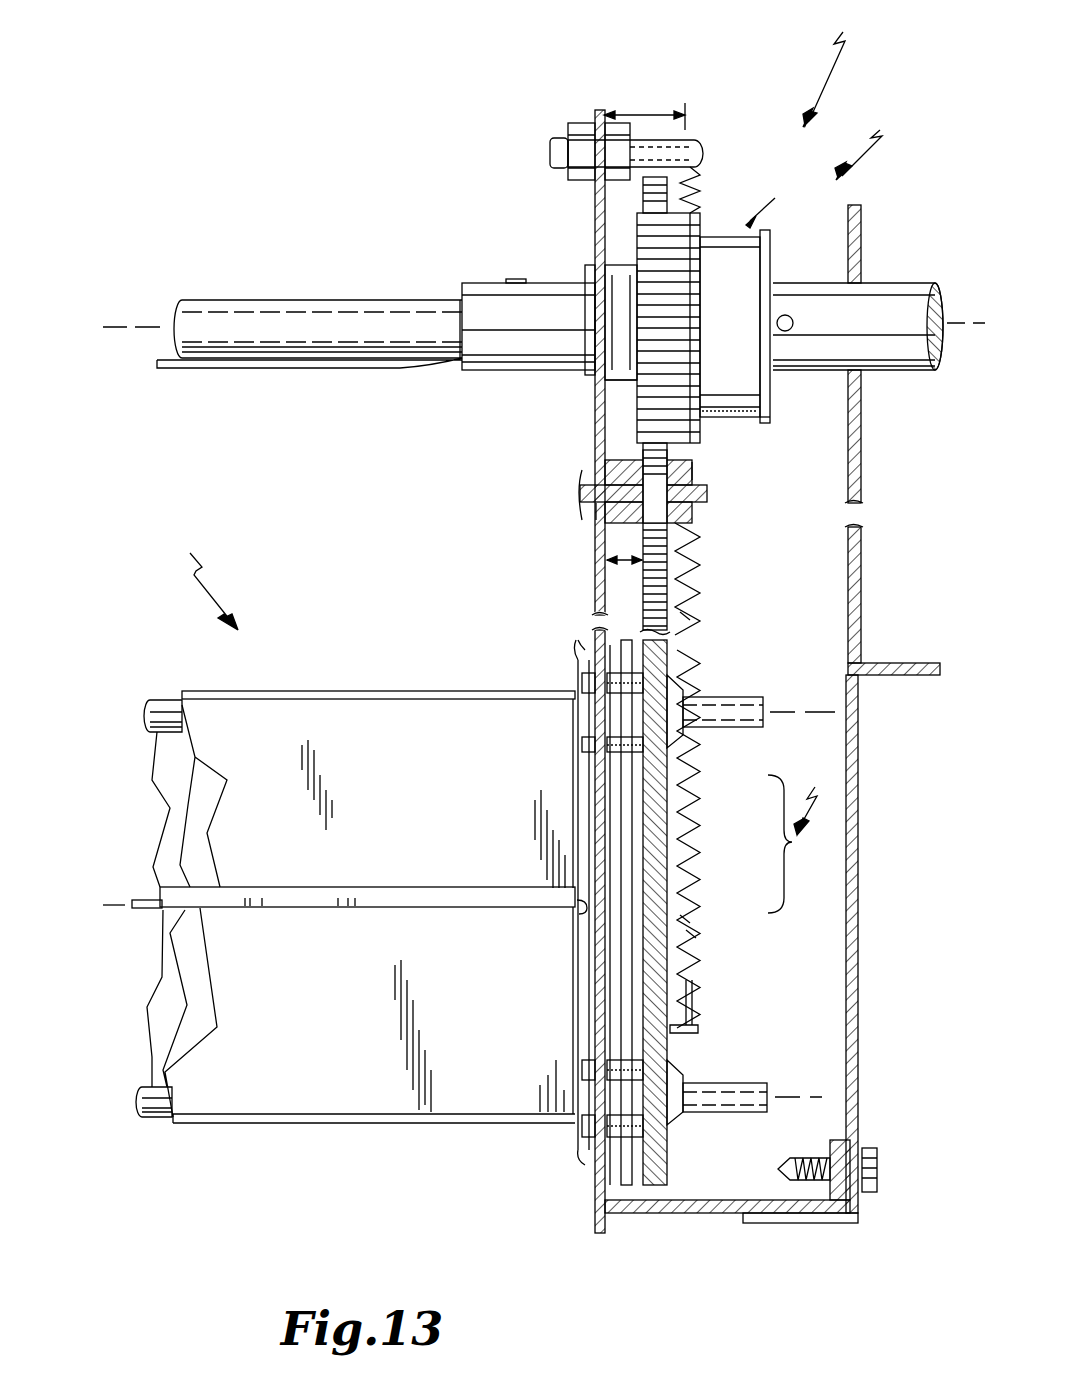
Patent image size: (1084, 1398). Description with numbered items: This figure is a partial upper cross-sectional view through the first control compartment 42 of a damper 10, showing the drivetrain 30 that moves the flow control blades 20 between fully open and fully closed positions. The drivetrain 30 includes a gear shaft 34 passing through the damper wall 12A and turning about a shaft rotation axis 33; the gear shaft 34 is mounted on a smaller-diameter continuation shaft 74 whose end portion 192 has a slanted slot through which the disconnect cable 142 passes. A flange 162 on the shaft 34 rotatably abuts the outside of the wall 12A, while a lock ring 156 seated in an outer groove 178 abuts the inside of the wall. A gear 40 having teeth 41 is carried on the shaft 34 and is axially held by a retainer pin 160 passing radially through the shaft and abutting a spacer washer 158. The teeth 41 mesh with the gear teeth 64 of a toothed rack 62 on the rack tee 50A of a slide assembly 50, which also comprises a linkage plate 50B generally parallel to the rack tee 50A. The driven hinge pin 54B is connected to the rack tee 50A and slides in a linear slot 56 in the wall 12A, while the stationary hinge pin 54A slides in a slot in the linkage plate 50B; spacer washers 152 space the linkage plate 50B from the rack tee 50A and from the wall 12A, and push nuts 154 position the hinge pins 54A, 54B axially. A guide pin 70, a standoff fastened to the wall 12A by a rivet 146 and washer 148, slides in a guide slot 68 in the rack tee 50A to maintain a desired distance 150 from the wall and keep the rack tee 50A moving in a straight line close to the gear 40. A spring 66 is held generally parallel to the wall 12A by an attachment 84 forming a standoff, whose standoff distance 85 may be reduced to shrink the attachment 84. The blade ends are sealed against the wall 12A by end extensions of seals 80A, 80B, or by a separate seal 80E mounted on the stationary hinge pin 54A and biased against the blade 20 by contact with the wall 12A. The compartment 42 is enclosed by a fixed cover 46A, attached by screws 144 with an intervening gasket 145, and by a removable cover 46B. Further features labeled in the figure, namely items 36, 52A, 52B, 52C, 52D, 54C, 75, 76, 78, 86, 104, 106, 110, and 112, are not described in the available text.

The damper 10 is at (826, 64).
The wall 12A is at (596, 431).
The flow control blades 20 is at (205, 577).
The drivetrain 30 is at (867, 139).
The shaft rotation axis 33 is at (140, 325).
The gear shaft 34 is at (490, 370).
The bracket flange 36 is at (895, 663).
The gear 40 is at (753, 298).
The teeth 41 is at (697, 217).
The first control compartment 42 is at (684, 1213).
The fixed cover 46A is at (860, 880).
The removable cover 46B is at (862, 545).
The slide assembly 50 is at (755, 839).
The rack tee 50A is at (700, 613).
The linkage plate 50B is at (670, 915).
The motor mount arm 52A is at (153, 763).
The motor mount arm 52B is at (201, 804).
The motor mount arm 52C is at (152, 1030).
The motor mount arm 52D is at (183, 1006).
The stationary hinge pin 54A is at (745, 697).
The driven hinge pin 54B is at (760, 1083).
The middle pivot pin 54C is at (145, 900).
The linear slot 56 is at (585, 770).
The toothed rack 62 is at (693, 570).
The gear teeth 64 is at (690, 525).
The spring 66 is at (692, 936).
The guide slot 68 is at (685, 462).
The guide pin 70 is at (592, 506).
The continuation shaft 74 is at (345, 300).
The lower pin axis 75 is at (800, 1097).
The upper pin axis 76 is at (795, 722).
The middle pin axis 78 is at (118, 913).
The seal 80A is at (374, 1015).
The seal 80B is at (401, 793).
The seal 80E is at (590, 650).
The attachment 84 is at (703, 153).
The standoff distance 85 is at (649, 112).
The stop bracket 86 is at (698, 1028).
The plate slot 104 is at (360, 887).
The plate hole 106 is at (255, 887).
The center plate 110 is at (430, 887).
The top plate 112 is at (388, 691).
The disconnect cable 142 is at (275, 368).
The screws 144 is at (795, 1158).
The gasket 145 is at (877, 1160).
The rivet 146 is at (578, 481).
The washer 148 is at (705, 485).
The distance 150 is at (607, 560).
The spacer washers 152 is at (600, 690).
The push nuts 154 is at (684, 668).
The lock ring 156 is at (588, 263).
The spacer washer 158 is at (770, 402).
The retainer pin 160 is at (787, 315).
The flange 162 is at (610, 382).
The outer groove 178 is at (605, 285).
The end portion 192 is at (458, 310).